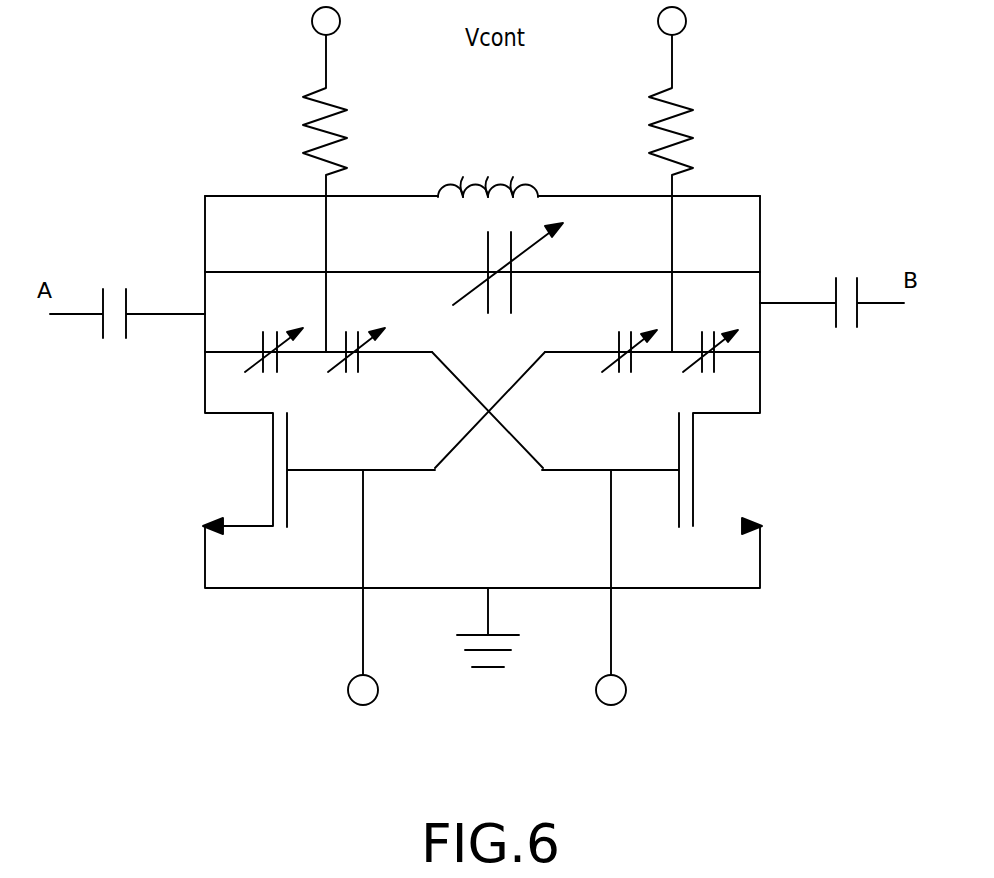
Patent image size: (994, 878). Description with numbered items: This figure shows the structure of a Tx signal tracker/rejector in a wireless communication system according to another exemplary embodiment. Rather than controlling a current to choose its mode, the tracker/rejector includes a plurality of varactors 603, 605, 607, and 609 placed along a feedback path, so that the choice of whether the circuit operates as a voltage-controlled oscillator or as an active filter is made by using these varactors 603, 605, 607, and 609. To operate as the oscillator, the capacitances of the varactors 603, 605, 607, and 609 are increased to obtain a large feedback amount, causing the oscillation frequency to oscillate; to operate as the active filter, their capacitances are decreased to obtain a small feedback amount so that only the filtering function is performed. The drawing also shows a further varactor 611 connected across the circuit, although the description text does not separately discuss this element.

The varactor 603 is at (262, 335).
The varactor 605 is at (346, 336).
The varactor 607 is at (618, 336).
The varactor 609 is at (700, 333).
The fifth varactor 611 is at (511, 296).